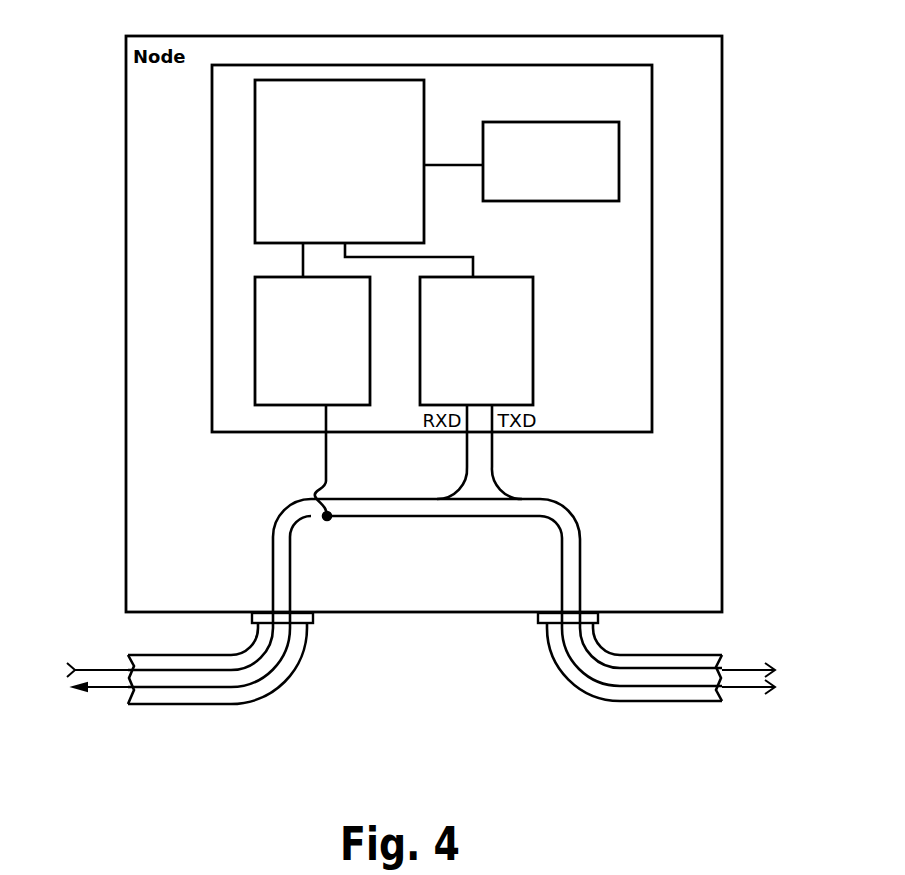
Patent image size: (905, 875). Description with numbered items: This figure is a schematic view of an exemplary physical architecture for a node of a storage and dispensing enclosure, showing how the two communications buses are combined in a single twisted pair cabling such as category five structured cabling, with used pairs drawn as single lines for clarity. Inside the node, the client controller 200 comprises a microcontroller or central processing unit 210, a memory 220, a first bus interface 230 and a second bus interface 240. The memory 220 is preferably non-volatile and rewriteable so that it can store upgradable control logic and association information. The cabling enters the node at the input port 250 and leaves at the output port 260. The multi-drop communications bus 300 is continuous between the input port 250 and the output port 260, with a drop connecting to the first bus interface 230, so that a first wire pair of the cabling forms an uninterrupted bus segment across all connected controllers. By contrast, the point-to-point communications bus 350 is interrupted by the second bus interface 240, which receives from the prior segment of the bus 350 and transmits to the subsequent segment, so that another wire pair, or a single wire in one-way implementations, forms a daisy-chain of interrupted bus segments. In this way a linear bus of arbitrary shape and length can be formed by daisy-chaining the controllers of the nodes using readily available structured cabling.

The client controller 200 is at (432, 248).
The central processing unit 210 is at (339, 161).
The memory 220 is at (551, 161).
The first bus interface 230 is at (312, 341).
The second bus interface 240 is at (476, 341).
The input port 250 is at (315, 623).
The output port 260 is at (538, 620).
The multi-drop communications bus 300 is at (472, 518).
The point-to-point communications bus 350 is at (272, 550).